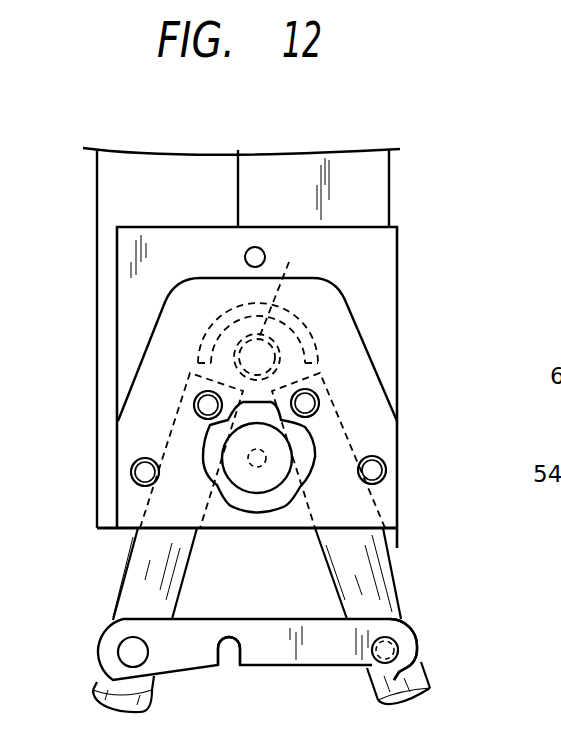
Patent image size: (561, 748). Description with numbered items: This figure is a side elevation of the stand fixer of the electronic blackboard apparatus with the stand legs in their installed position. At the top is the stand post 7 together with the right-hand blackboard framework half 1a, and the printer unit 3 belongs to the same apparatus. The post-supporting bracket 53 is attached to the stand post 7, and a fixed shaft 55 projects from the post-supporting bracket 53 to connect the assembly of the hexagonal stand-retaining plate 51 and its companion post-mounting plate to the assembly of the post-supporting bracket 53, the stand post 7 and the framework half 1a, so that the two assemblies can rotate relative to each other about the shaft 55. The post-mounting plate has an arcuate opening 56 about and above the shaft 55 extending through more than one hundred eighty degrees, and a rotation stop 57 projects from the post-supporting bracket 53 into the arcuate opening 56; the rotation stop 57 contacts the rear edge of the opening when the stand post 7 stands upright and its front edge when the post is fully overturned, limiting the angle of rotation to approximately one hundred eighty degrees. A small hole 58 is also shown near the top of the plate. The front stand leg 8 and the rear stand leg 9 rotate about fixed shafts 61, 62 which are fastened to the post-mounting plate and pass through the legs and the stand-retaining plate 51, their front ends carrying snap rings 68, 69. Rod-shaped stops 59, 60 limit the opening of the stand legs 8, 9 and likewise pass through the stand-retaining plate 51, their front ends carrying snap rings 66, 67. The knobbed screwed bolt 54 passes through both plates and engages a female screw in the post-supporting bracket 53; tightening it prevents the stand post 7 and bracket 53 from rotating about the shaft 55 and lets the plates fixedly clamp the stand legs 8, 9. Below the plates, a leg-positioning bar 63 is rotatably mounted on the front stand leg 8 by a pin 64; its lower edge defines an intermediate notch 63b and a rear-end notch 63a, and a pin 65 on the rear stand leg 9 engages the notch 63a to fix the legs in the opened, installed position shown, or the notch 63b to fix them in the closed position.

The right-hand blackboard framework half 1a is at (241, 312).
The stand post 7 is at (353, 161).
The post-supporting bracket 53 is at (370, 237).
The printer unit 3 is at (272, 535).
The stand-retaining plate 51 is at (304, 349).
The hole 58 is at (224, 226).
The fixed shaft 55 is at (281, 285).
The arcuate opening 56 is at (211, 323).
The rotation stop 57 is at (337, 354).
The snap ring 68 is at (145, 445).
The snap ring 69 is at (359, 444).
The fixed shaft 61 is at (139, 411).
The fixed shaft 62 is at (369, 403).
The rod-shaped stop 59 is at (104, 486).
The rod-shaped stop 60 is at (405, 483).
The snap ring 66 is at (103, 464).
The snap ring 67 is at (408, 465).
The knobbed screwed bolt 54 is at (328, 457).
The front stand leg 8 is at (135, 620).
The rear stand leg 9 is at (381, 616).
The leg-positioning bar 63 is at (257, 667).
The notch 63a is at (441, 666).
The notch 63b is at (239, 676).
The pin 64 is at (98, 652).
The pin 65 is at (370, 690).